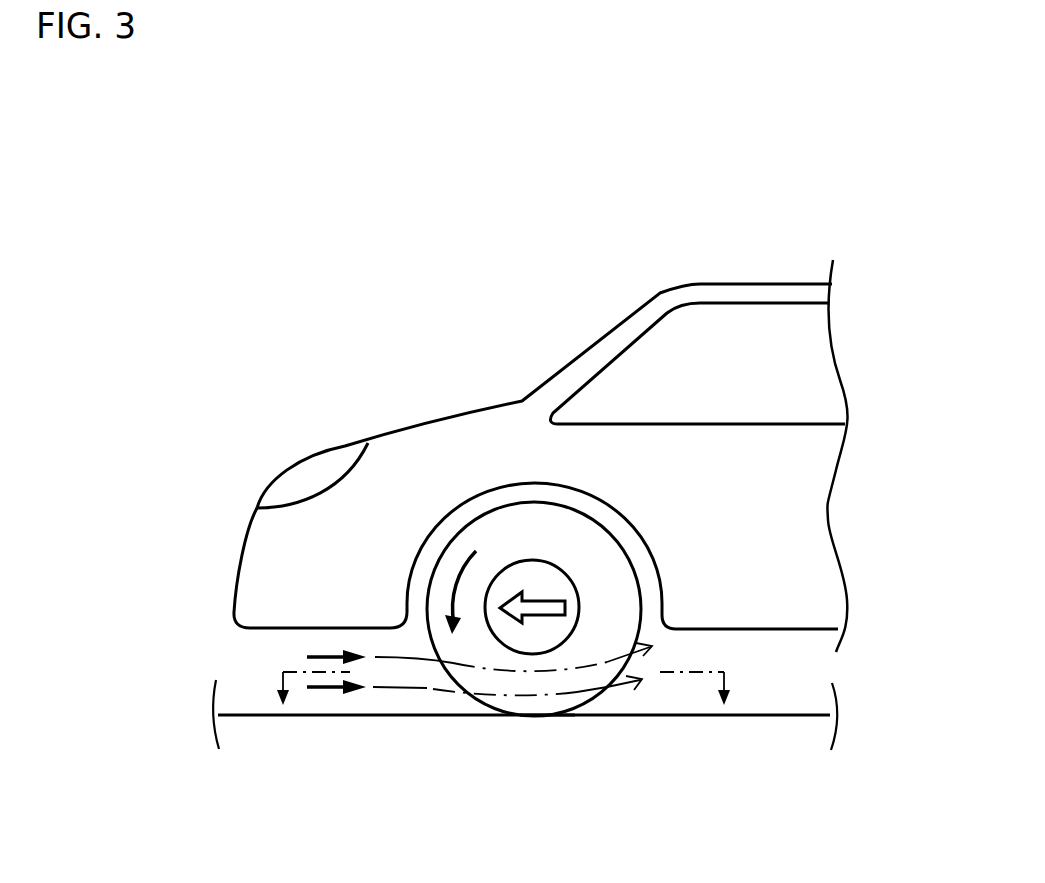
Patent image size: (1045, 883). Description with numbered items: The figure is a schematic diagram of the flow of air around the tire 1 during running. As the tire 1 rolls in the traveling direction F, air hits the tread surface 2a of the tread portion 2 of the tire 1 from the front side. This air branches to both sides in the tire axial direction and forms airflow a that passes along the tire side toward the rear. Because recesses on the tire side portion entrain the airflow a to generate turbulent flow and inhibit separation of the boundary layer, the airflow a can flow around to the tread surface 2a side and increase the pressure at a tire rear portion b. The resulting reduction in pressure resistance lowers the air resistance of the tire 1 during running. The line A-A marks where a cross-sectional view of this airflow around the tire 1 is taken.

The tire 1 is at (593, 560).
The tread portion 2 is at (437, 567).
The tread surface 2a is at (453, 522).
The traveling direction F is at (543, 597).
The airflow a is at (548, 676).
The tire rear portion b is at (650, 632).
The line A- A is at (505, 686).